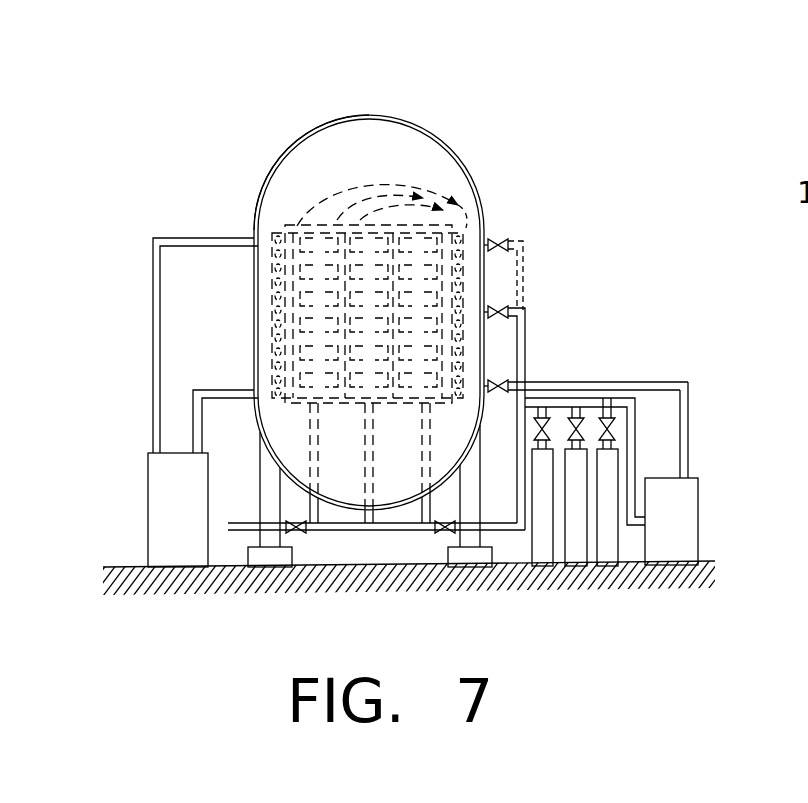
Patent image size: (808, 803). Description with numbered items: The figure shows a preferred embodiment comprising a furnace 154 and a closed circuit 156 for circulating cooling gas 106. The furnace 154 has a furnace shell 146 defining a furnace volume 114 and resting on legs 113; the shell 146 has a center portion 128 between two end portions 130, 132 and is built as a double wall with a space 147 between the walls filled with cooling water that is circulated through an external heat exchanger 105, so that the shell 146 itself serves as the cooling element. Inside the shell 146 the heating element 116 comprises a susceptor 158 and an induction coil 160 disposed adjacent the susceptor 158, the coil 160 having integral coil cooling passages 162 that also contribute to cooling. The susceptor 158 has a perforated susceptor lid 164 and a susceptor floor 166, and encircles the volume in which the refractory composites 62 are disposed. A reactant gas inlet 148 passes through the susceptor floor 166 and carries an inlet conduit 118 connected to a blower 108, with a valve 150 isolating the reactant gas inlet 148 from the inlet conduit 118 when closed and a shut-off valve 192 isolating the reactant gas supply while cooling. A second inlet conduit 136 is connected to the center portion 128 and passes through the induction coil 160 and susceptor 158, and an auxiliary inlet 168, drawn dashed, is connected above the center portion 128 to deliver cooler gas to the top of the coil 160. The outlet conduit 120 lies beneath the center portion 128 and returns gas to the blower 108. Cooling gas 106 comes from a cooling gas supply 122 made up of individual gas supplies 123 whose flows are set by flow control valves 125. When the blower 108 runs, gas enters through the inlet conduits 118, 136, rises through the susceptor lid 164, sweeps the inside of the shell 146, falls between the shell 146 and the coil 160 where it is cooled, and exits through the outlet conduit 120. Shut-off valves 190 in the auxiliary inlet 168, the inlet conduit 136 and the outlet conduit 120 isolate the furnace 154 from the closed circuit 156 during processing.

The refractory composites 62 is at (272, 268).
The heat exchanger 105 is at (178, 539).
The cooling gas 106 is at (427, 192).
The blower 108 is at (680, 545).
The legs 113 is at (270, 537).
The furnace volume 114 is at (336, 142).
The heating element 116 is at (272, 380).
The inlet conduit 118 is at (467, 530).
The outlet conduit 120 is at (608, 387).
The cooling gas supply 122 is at (690, 382).
The individual gas supplies 123 is at (610, 477).
The flow control valves 125 is at (612, 424).
The center portion 128 is at (252, 290).
The end portion 130 is at (250, 430).
The end portion 132 is at (252, 203).
The inlet conduit 136 is at (518, 380).
The furnace shell 146 is at (253, 234).
The space 147 is at (254, 219).
The reactant gas inlet 148 is at (357, 530).
The valve 150 is at (452, 535).
The furnace 154 is at (312, 130).
The closed circuit 156 is at (535, 306).
The susceptor 158 is at (487, 265).
The induction coil 160 is at (483, 223).
The coil cooling passages 162 is at (477, 198).
The susceptor lid 164 is at (330, 225).
The susceptor floor 166 is at (290, 405).
The auxiliary inlet 168 is at (517, 240).
The shut-off valves 190 is at (500, 236).
The shut-off valve 192 is at (300, 535).